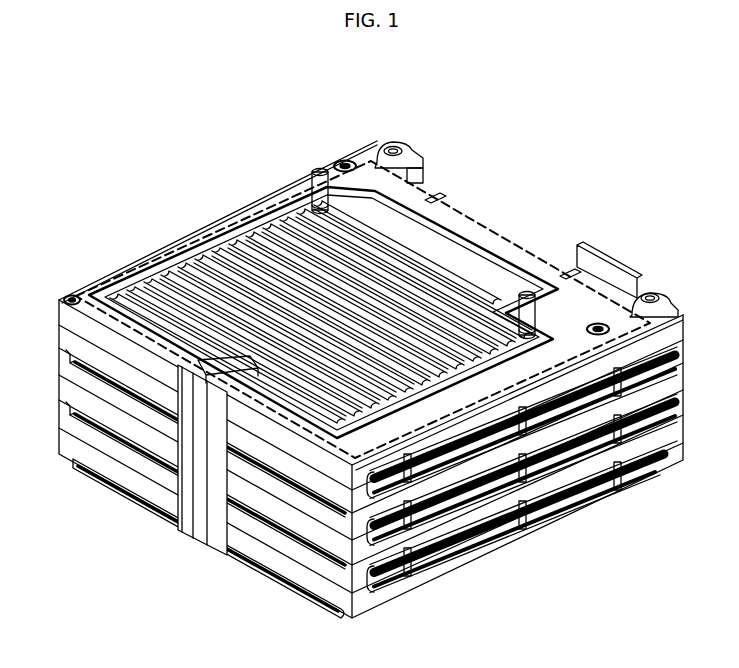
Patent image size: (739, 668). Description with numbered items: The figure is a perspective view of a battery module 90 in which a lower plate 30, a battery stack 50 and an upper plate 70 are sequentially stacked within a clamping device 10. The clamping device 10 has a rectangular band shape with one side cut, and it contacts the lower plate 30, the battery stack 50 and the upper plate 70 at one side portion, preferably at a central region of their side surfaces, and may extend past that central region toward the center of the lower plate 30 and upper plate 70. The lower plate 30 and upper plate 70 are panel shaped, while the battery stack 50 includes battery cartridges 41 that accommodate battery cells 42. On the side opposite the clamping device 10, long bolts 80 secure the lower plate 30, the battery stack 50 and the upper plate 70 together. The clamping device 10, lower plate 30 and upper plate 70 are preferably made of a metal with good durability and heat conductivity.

The battery module 90 is at (192, 99).
The long bolts 80 is at (405, 146).
The battery cells 42 is at (505, 232).
The upper plate 70 is at (548, 262).
The battery stack 50 is at (687, 322).
The battery cartridges 41 is at (66, 389).
The clamping device 10 is at (187, 519).
The lower plate 30 is at (313, 603).